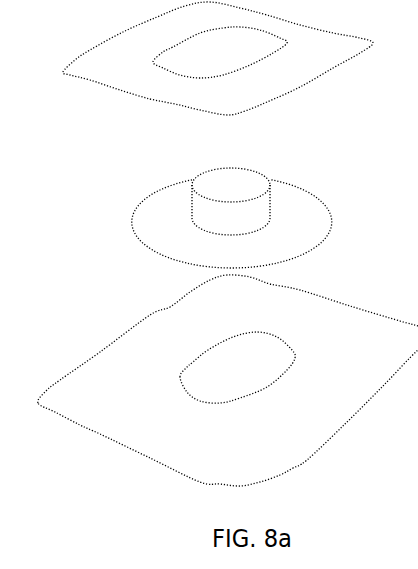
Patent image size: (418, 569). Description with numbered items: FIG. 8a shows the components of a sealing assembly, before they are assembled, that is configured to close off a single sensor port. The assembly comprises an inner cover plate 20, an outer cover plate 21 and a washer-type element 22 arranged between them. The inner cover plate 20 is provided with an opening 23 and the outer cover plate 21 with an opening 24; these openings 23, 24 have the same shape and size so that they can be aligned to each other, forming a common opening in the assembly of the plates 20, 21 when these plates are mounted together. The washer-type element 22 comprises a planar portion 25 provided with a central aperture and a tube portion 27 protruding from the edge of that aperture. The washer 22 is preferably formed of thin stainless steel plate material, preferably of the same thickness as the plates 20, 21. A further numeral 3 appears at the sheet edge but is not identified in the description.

The inner cover plate 20 is at (328, 50).
The outer cover plate 21 is at (103, 390).
The washer-type element 22 is at (217, 213).
The opening 23 is at (202, 62).
The opening 24 is at (219, 374).
The planar portion 25 is at (298, 222).
The tube portion 27 is at (203, 210).
The element 3 is at (411, 445).